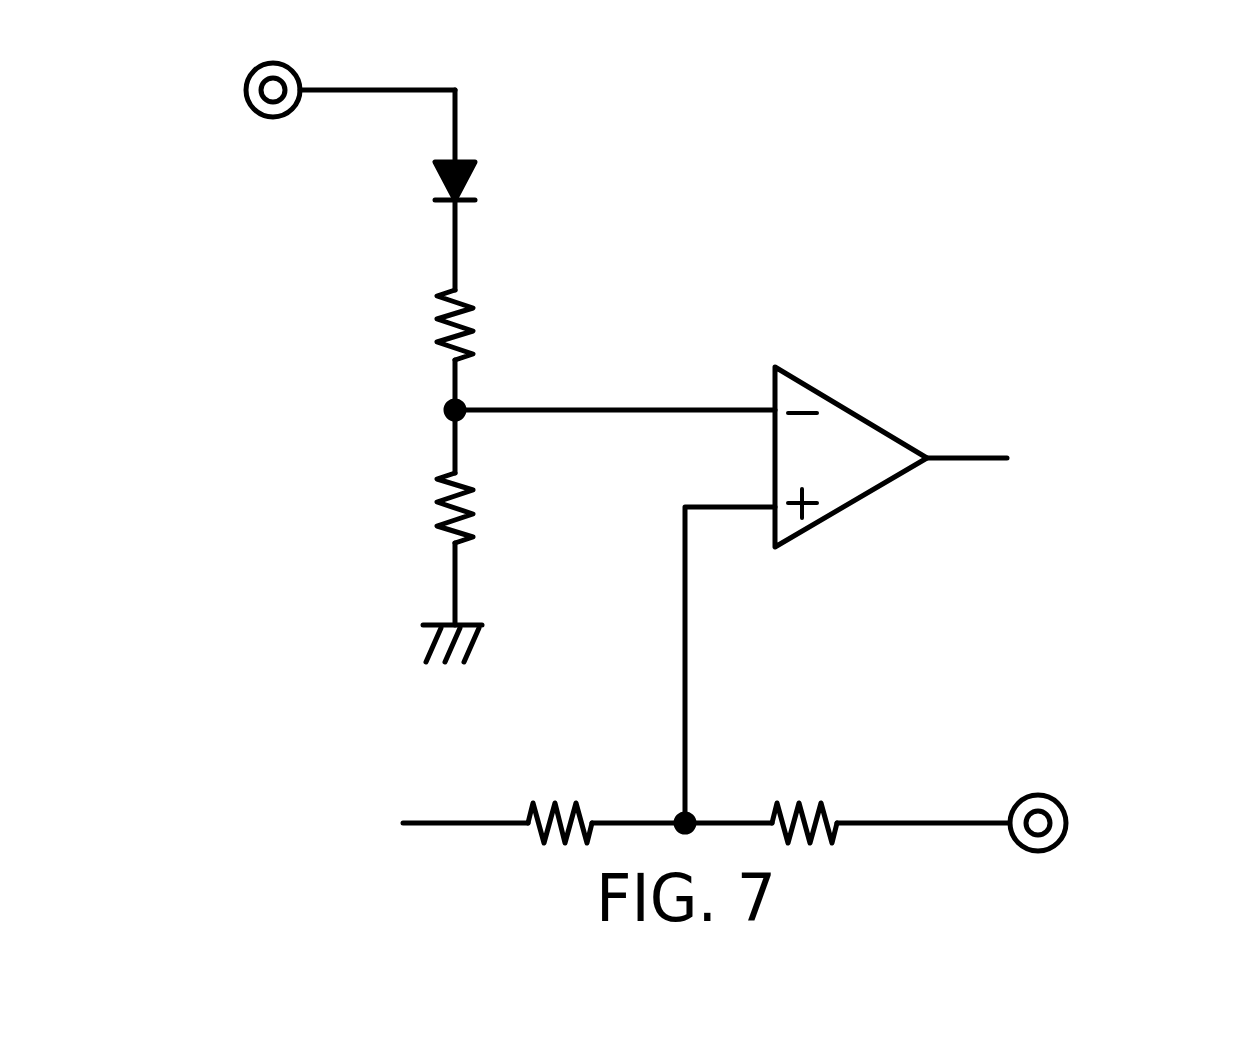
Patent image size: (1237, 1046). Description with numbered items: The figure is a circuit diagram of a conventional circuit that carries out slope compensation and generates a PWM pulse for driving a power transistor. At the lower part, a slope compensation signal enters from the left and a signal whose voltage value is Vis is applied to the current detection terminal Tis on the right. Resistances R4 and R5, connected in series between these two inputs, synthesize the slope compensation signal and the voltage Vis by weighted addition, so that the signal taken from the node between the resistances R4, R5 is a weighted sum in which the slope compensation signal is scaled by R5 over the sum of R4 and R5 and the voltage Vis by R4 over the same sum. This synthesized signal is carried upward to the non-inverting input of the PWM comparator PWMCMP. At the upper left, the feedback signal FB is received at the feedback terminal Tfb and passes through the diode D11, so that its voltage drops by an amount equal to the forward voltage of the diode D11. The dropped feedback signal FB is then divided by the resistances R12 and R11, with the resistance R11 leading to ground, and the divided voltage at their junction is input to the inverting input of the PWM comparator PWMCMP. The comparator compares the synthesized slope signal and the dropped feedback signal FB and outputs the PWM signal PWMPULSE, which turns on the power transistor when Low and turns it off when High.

The feedback terminal Tfb is at (270, 120).
The feedback signal FB is at (365, 64).
The diode D11 is at (428, 187).
The resistance R12 is at (428, 330).
The resistance R11 is at (428, 505).
The PWM comparator PWMCMP is at (855, 413).
The PWM signal PWMPULSE is at (1073, 464).
The resistance R4 is at (606, 801).
The resistance R5 is at (846, 801).
The current detection terminal Tis is at (1068, 823).